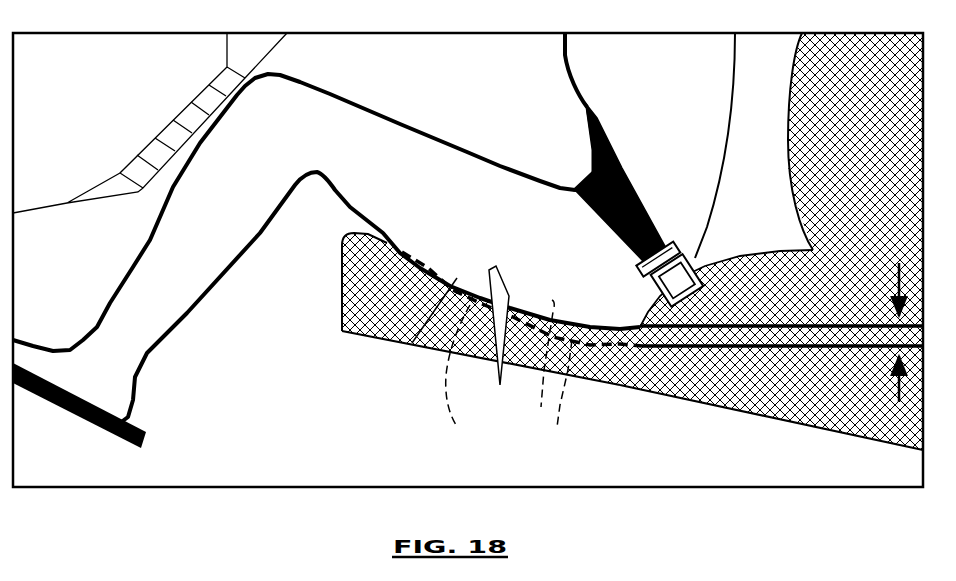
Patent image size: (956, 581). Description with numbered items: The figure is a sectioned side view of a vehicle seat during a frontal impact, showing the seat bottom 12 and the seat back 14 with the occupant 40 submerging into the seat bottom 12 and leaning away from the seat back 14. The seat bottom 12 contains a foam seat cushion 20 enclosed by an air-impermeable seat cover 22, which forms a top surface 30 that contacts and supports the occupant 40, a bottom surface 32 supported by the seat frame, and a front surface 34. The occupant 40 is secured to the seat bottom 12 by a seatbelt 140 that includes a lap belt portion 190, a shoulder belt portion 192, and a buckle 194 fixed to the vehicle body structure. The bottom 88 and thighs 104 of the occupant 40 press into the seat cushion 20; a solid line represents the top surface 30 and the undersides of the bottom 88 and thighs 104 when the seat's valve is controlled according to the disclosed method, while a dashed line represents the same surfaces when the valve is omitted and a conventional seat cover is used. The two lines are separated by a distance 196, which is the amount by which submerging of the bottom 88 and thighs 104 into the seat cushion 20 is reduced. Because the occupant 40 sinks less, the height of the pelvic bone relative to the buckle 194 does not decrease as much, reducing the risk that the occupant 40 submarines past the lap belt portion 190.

The seat bottom 12 is at (336, 331).
The seat back 14 is at (798, 47).
The seat cushion 20 is at (438, 326).
The seat cover 22 is at (370, 336).
The top surface 30 is at (500, 382).
The bottom surface 32 is at (752, 414).
The front surface 34 is at (341, 282).
The occupant 40 is at (555, 64).
The bottom 88 is at (556, 428).
The thighs 104 is at (440, 160).
The seatbelt 140 is at (584, 171).
The lap belt portion 190 is at (598, 186).
The shoulder belt portion 192 is at (585, 120).
The buckle 194 is at (697, 263).
The distance 196 is at (897, 400).